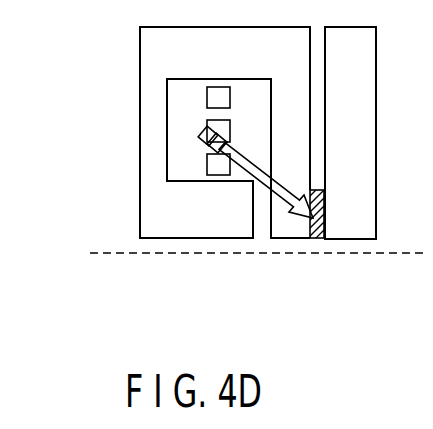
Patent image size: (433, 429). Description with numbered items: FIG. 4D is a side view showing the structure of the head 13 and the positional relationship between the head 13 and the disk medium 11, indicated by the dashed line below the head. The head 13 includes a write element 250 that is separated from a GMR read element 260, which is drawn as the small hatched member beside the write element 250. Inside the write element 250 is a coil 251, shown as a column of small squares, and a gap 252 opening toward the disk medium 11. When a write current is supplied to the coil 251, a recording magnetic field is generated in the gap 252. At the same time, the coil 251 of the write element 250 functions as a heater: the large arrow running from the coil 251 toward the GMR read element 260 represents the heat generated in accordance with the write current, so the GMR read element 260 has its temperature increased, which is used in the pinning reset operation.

The write element 250 is at (140, 58).
The coil 251 is at (233, 108).
The gap 252 is at (263, 238).
The GMR read element 260 is at (315, 238).
The head 13 is at (128, 143).
The disk medium 11 is at (124, 256).